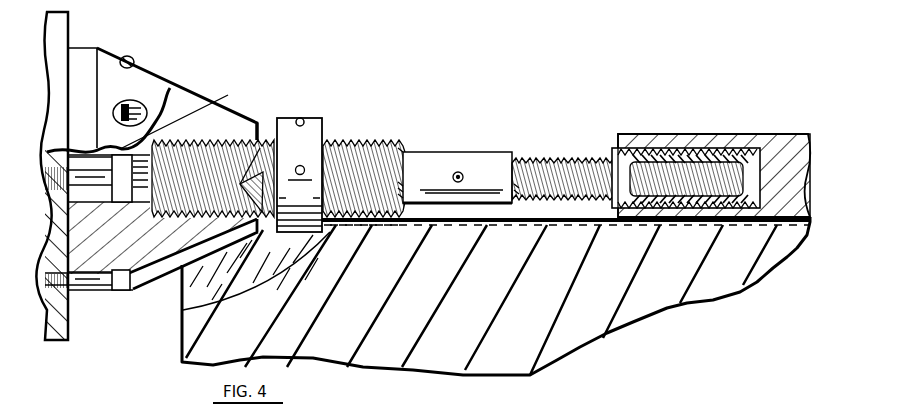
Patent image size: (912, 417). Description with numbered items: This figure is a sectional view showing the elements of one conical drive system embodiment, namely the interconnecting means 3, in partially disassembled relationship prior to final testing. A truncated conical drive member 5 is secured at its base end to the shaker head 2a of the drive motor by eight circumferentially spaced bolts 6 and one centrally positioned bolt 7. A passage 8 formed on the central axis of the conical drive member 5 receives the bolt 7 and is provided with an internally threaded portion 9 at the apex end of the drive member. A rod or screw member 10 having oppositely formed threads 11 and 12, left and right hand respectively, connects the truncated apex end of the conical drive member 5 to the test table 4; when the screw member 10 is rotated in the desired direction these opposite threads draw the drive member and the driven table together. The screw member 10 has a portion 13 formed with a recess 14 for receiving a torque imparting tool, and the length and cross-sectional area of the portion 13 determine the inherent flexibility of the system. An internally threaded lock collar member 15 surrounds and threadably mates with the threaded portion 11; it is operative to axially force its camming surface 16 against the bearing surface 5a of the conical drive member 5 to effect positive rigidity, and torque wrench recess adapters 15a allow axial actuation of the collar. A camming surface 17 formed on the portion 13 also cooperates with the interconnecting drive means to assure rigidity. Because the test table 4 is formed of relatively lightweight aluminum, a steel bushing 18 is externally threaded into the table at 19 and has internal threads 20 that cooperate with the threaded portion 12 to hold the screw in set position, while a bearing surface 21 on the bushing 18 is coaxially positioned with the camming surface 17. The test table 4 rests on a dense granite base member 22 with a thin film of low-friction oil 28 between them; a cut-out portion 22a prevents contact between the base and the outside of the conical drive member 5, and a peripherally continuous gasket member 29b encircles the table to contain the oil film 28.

The shaker head 2a is at (68, 22).
The interconnecting means 3 is at (374, 94).
The test table 4 is at (772, 168).
The conical drive member 5 is at (170, 88).
The bearing surface 5a is at (256, 135).
The circumferentially spaced bolts 6 is at (124, 105).
The centrally positioned bolt 7 is at (122, 203).
The passage 8 is at (140, 203).
The internally threaded portion 9 is at (222, 150).
The screw member 10 is at (464, 178).
The left hand threads 11 is at (355, 172).
The right hand threads 12 is at (570, 158).
The portion of screw member 13 is at (460, 151).
The recess 14 is at (453, 177).
The lock collar member 15 is at (299, 175).
The torque wrench recess adapters 15a is at (300, 118).
The camming surface 16 is at (255, 180).
The camming surface 17 is at (523, 152).
The steel bushing 18 is at (757, 153).
The external threads 19 is at (708, 152).
The internal threads 20 is at (700, 158).
The bearing surface 21 is at (612, 148).
The base member 22 is at (460, 331).
The cut-out portion 22a is at (260, 295).
The low-friction constituent 28 is at (467, 227).
The gasket member 29b is at (375, 227).